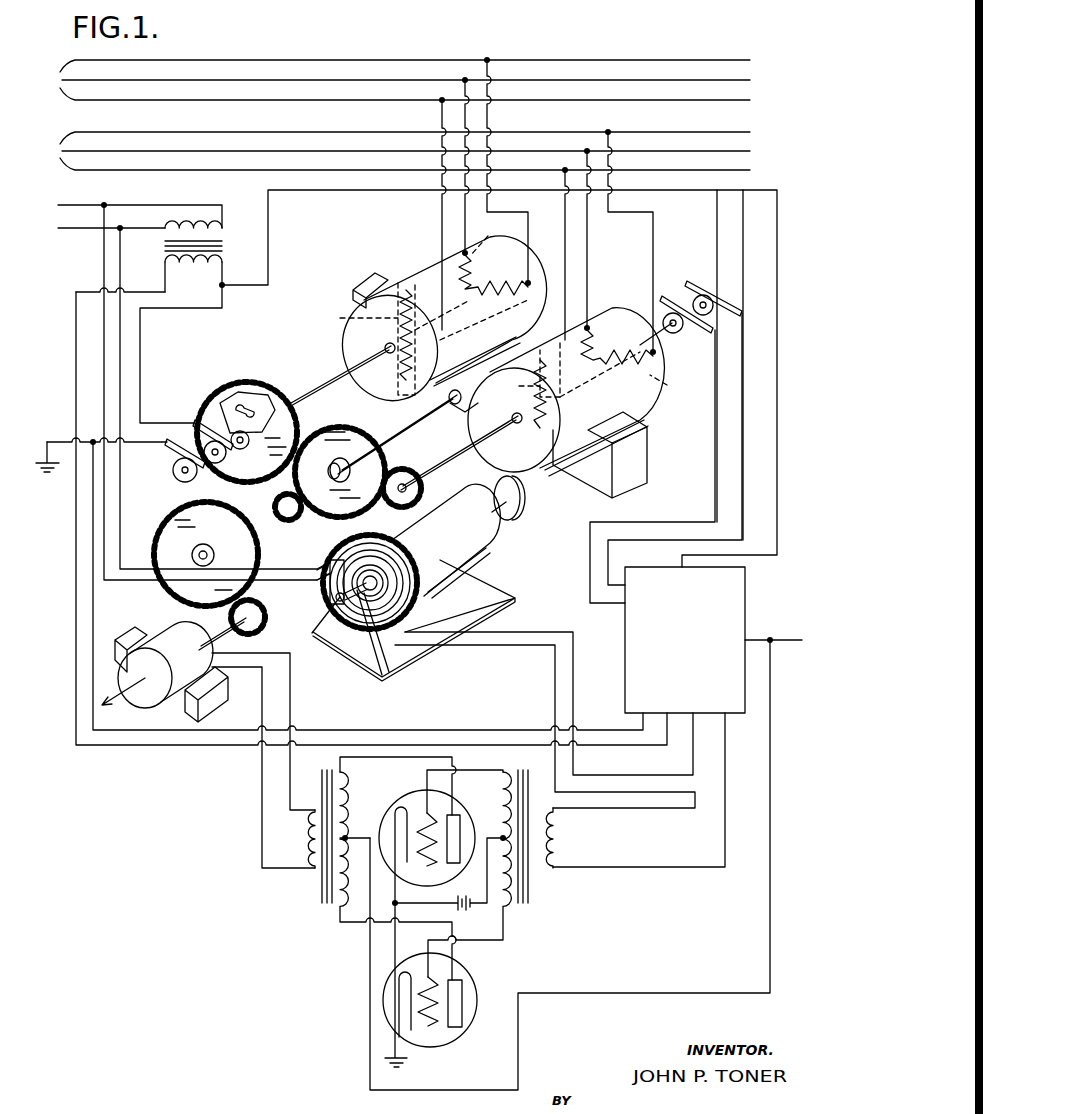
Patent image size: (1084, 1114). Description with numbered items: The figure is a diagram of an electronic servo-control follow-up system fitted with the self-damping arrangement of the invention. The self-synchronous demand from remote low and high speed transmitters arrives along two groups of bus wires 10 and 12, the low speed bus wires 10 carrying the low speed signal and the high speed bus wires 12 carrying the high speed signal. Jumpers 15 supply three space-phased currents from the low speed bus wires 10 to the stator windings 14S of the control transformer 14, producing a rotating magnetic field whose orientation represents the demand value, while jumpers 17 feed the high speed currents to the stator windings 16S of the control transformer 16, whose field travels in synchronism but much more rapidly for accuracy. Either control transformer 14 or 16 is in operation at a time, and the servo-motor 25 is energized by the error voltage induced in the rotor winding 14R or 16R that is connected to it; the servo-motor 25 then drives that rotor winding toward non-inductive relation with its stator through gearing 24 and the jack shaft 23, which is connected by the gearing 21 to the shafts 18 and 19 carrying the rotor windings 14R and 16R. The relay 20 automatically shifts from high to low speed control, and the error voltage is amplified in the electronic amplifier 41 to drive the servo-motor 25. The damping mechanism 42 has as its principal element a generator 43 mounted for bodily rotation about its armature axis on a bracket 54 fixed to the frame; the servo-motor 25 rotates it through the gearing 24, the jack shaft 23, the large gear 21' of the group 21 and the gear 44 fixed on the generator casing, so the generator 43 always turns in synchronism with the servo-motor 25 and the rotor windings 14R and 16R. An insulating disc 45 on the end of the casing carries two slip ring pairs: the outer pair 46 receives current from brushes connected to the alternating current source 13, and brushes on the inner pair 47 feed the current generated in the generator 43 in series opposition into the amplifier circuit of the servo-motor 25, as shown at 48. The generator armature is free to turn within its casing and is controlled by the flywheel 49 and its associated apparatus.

The low speed bus wires 10 is at (393, 80).
The high speed bus wires 12 is at (393, 151).
The alternating current source 13 is at (403, 378).
The control transformer 14 is at (417, 270).
The rotor winding 14R is at (360, 339).
The stator windings 14S is at (471, 280).
The jumpers 15 is at (487, 118).
The control transformer 16 is at (620, 313).
The rotor winding 16R is at (526, 385).
The stator windings 16S is at (630, 364).
The jumpers 17 is at (627, 214).
The shaft 18 is at (322, 390).
The shaft 19 is at (445, 461).
The relay 20 is at (586, 640).
The gearing 21 is at (278, 511).
The large gear 21' is at (386, 453).
The jack shaft 23 is at (240, 514).
The gearing 24 is at (240, 585).
The servo-motor 25 is at (163, 633).
The electronic amplifier 41 is at (342, 940).
The mechanism 42 is at (527, 530).
The generator 43 is at (490, 543).
The gear 44 is at (422, 593).
The insulating disc 45 is at (397, 610).
The outer slip ring pair 46 is at (332, 590).
The inner slip ring pair 47 is at (362, 605).
The series opposition connection 48 is at (669, 763).
The flywheel 49 is at (522, 498).
The bracket 54 is at (497, 593).